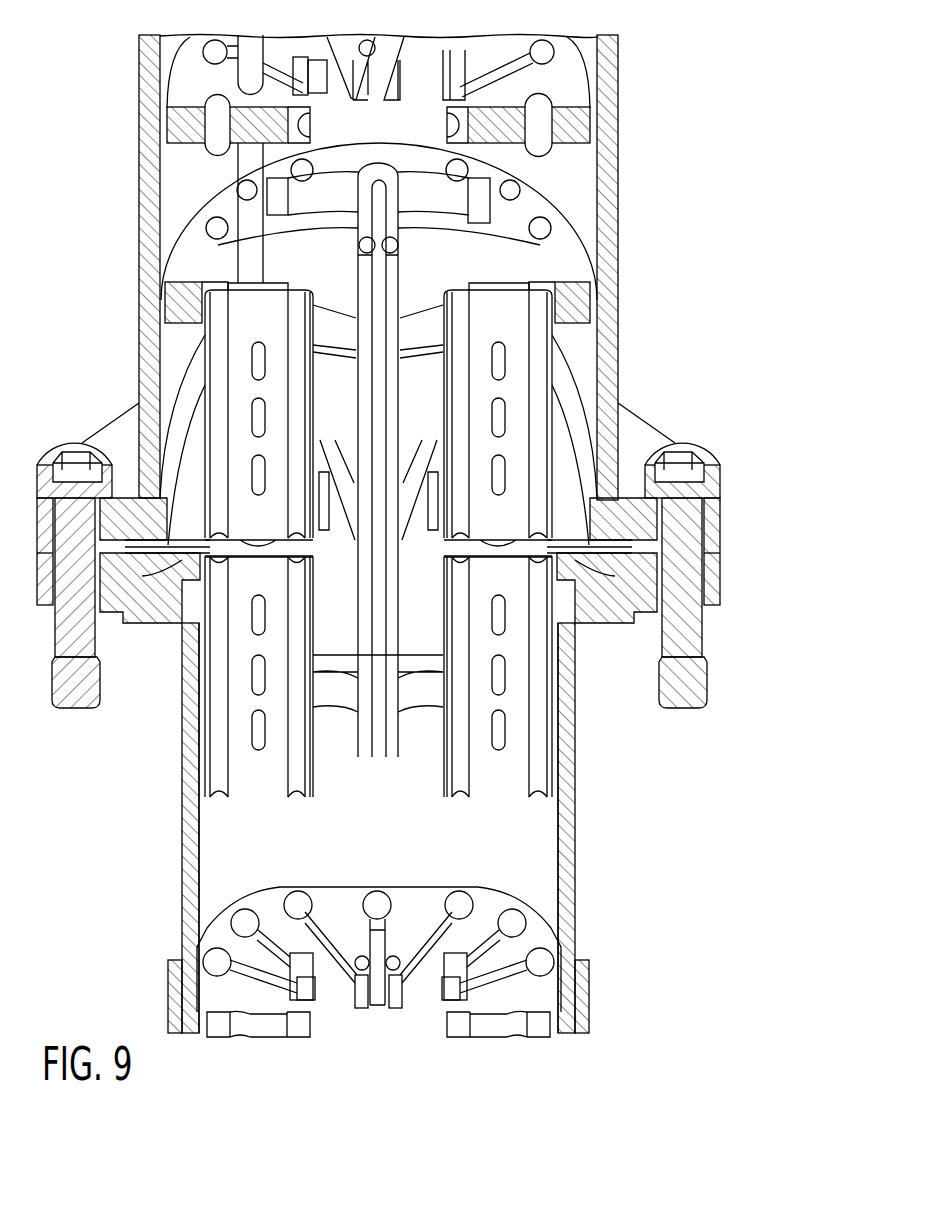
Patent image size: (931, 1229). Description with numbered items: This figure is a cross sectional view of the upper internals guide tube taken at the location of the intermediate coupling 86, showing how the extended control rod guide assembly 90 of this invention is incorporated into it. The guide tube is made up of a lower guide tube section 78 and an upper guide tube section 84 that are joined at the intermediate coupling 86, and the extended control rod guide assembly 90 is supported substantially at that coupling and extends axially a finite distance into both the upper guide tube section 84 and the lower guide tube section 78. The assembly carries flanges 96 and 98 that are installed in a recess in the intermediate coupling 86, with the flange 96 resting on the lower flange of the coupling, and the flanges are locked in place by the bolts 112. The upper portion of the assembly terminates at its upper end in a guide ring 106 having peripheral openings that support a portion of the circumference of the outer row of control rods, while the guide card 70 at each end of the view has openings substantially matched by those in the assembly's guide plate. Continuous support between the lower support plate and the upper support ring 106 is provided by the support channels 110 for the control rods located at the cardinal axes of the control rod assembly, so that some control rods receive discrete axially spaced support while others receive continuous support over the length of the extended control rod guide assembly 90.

The guide card 70 is at (568, 90).
The lower guide tube section 78 is at (570, 845).
The upper guide tube section 84 is at (607, 287).
The intermediate coupling 86 is at (628, 412).
The extended control rod guide assembly 90 is at (518, 397).
The flange 96 is at (613, 546).
The flange 98 is at (615, 576).
The upper end guide ring 106 is at (567, 248).
The support channels 110 is at (365, 236).
The bolts 112 is at (693, 627).